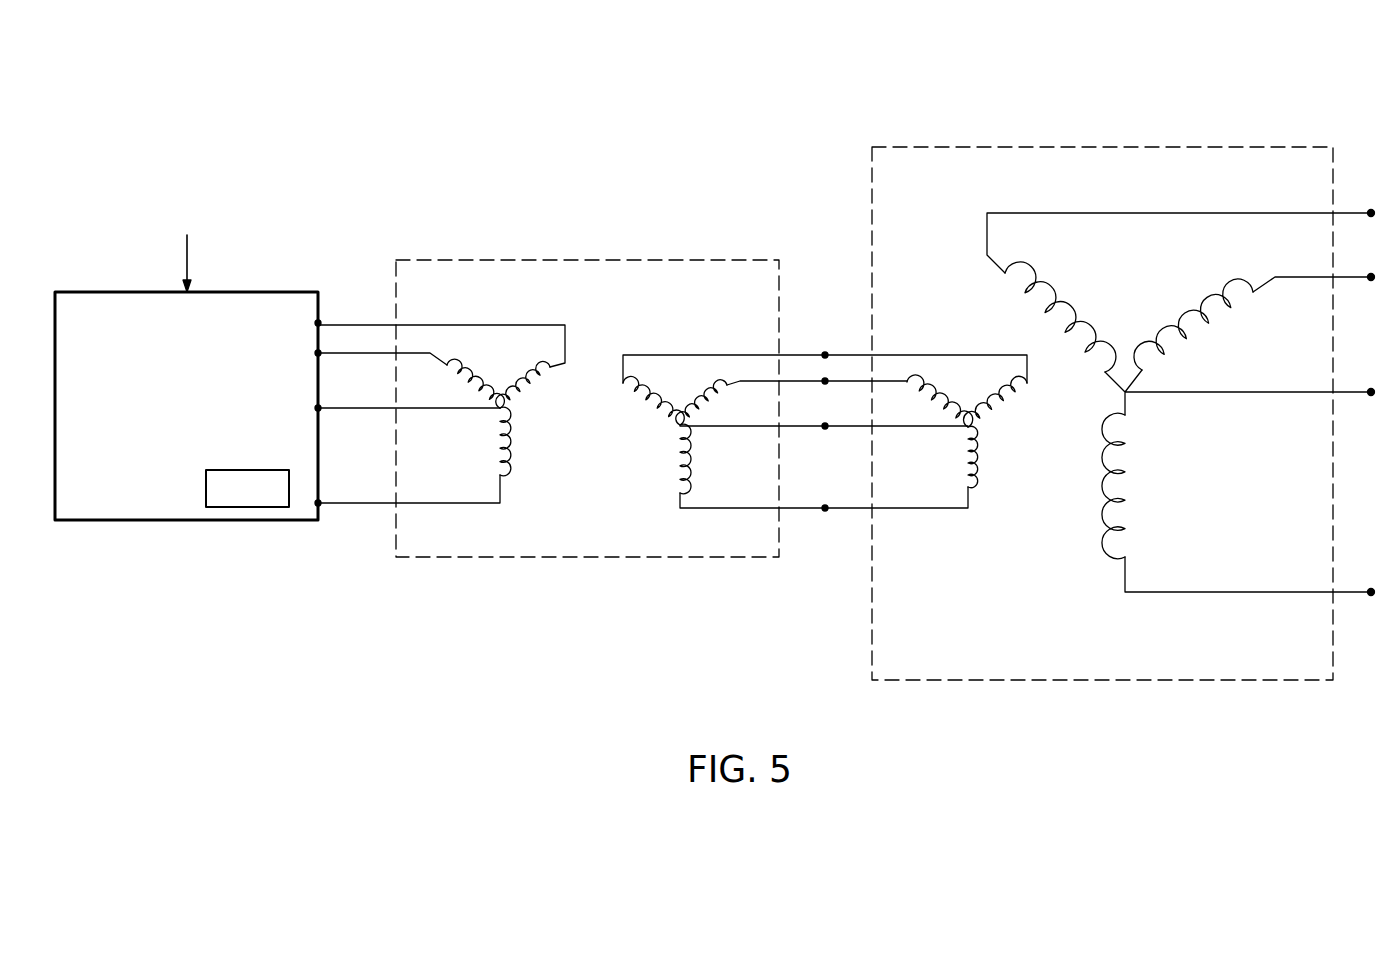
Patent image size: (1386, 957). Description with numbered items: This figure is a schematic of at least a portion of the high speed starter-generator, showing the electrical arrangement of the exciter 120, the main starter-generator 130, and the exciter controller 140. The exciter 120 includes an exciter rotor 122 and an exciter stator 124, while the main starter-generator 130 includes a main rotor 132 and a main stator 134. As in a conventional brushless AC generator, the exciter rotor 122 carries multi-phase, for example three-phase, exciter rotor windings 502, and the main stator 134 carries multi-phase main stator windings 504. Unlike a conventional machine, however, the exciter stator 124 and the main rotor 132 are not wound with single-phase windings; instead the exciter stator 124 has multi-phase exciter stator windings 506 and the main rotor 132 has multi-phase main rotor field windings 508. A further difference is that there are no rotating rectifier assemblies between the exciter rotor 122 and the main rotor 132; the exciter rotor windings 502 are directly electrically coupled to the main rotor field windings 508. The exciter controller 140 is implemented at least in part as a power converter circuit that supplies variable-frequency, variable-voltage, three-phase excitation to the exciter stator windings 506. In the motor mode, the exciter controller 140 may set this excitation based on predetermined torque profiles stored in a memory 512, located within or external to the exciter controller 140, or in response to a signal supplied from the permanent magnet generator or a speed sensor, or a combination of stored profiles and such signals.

The exciter 120 is at (505, 240).
The exciter rotor 122 is at (653, 306).
The exciter stator 124 is at (440, 288).
The main starter-generator 130 is at (1140, 122).
The main rotor 132 is at (936, 325).
The main stator 134 is at (1204, 180).
The exciter controller 140 is at (72, 290).
The exciter rotor windings 502 is at (698, 399).
The main stator windings 504 is at (1090, 294).
The exciter stator windings 506 is at (470, 374).
The main rotor field windings 508 is at (972, 388).
The memory 512 is at (206, 485).